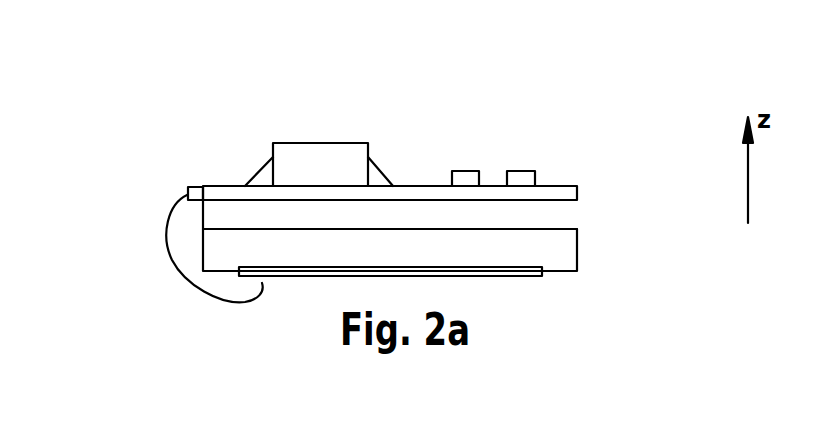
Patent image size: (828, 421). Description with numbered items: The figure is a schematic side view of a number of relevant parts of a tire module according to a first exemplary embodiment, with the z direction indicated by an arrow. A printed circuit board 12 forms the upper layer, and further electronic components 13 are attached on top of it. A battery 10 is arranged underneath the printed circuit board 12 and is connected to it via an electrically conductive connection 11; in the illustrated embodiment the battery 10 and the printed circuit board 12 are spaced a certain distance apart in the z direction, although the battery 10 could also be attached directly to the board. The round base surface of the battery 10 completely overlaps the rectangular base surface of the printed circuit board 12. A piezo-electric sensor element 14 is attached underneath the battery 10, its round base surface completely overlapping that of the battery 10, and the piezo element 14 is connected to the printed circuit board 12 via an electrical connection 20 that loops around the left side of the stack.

The battery 10 is at (562, 249).
The electrically conductive connection 11 is at (200, 221).
The printed circuit board 12 is at (220, 192).
The electronic components 13 is at (320, 143).
The piezo-electric sensor element 14 is at (513, 277).
The electrical connection 20 is at (172, 245).